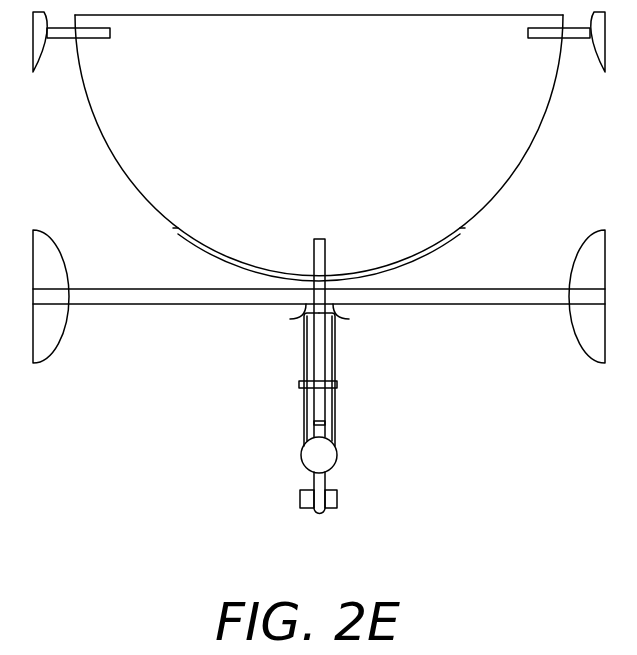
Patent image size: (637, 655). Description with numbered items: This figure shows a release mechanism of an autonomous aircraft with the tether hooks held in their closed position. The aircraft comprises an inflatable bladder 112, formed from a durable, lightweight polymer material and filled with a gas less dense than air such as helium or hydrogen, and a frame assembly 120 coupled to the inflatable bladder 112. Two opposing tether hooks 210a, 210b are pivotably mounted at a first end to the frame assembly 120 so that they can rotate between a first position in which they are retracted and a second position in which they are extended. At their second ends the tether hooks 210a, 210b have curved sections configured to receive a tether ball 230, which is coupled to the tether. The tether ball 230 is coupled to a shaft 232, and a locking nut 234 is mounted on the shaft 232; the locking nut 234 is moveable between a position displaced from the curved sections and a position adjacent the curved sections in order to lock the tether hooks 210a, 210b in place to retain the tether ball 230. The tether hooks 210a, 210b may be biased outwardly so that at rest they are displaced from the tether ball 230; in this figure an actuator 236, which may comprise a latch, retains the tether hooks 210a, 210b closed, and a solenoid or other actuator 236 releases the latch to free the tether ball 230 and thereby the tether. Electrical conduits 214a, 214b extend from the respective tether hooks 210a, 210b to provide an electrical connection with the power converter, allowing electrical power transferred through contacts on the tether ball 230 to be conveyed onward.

The inflatable bladder 112 is at (136, 182).
The frame assembly 120 is at (520, 288).
The electrical conduit 214a is at (290, 319).
The electrical conduit 214b is at (349, 319).
The tether hook 210a is at (304, 357).
The tether hook 210b is at (335, 355).
The actuator 236 is at (299, 384).
The tether ball 230 is at (308, 470).
The shaft 232 is at (328, 489).
The locking nut 234 is at (311, 510).